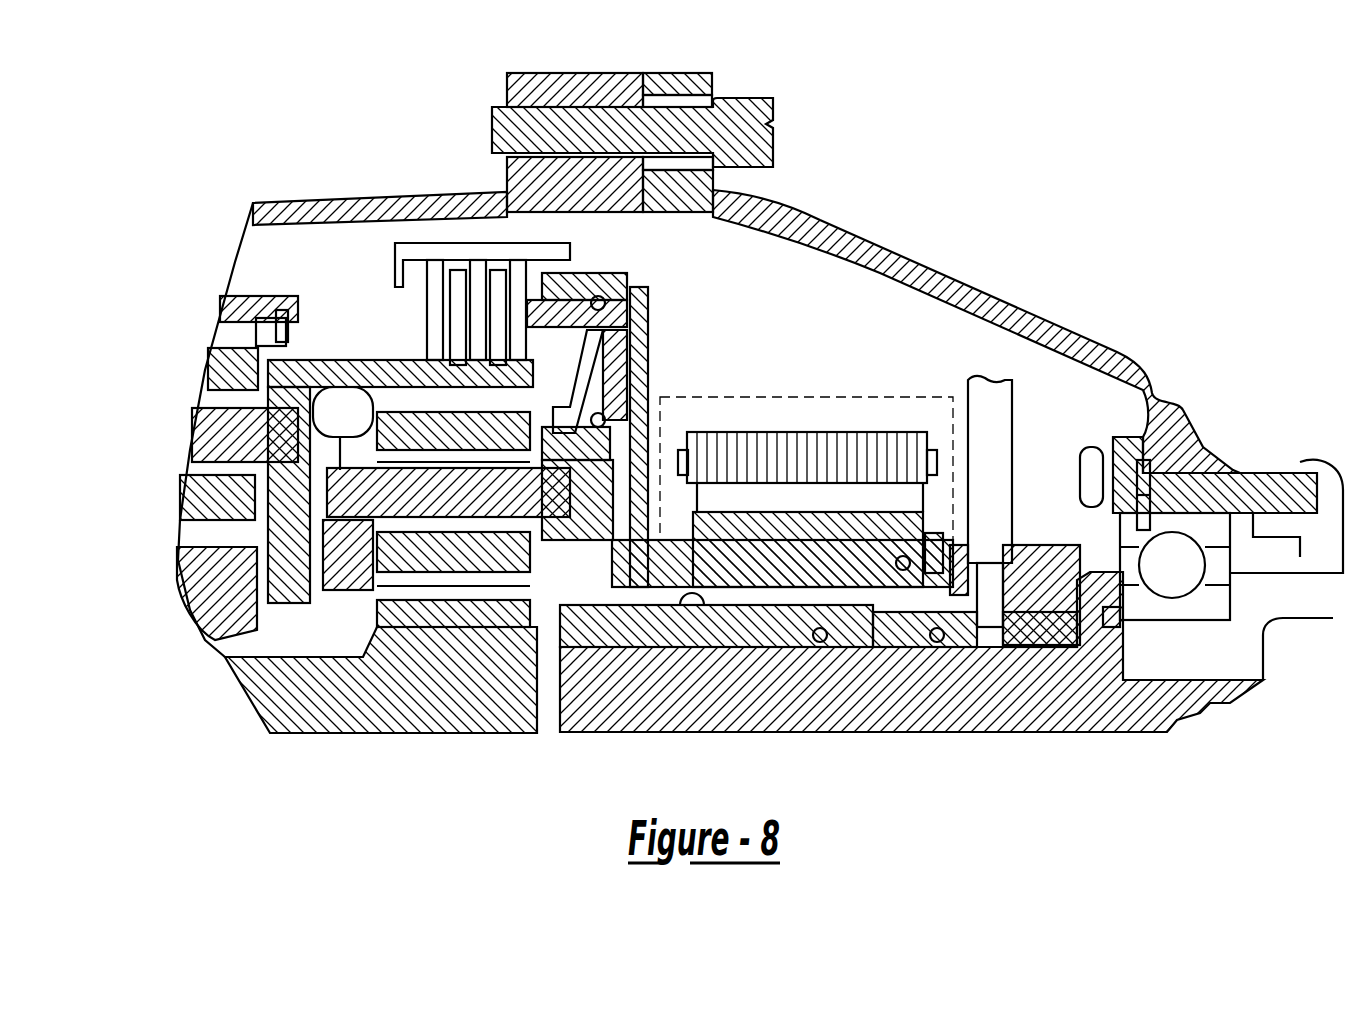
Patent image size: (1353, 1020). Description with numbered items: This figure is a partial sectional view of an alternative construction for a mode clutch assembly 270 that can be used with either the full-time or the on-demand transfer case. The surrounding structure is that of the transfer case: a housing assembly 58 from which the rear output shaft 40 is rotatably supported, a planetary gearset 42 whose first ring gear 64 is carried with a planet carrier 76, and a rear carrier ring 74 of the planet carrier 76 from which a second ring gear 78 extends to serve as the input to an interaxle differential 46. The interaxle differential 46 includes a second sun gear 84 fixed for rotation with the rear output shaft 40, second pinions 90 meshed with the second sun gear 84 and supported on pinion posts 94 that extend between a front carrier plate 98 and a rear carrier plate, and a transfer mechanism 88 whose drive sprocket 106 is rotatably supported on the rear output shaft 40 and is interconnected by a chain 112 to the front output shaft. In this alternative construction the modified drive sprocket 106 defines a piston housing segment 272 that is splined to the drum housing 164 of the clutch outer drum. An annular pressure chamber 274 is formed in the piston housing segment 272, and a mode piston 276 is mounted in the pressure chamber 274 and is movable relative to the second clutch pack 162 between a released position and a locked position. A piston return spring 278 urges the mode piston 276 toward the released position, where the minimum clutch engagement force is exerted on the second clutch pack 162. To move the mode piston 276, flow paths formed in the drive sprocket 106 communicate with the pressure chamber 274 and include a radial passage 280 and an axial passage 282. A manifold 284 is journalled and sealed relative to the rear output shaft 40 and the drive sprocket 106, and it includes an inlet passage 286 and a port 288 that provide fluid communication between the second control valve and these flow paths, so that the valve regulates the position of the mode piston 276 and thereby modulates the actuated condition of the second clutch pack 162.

The rear output shaft 40 is at (1098, 720).
The planetary gearset 42 is at (175, 440).
The interaxle differential 46 is at (328, 635).
The housing assembly 58 is at (1128, 347).
The first ring gear 64 is at (245, 304).
The rear carrier ring 74 is at (275, 515).
The planet carrier 76 is at (300, 358).
The second ring gear 78 is at (406, 362).
The second sun gear 84 is at (502, 678).
The transfer mechanism 88 is at (933, 370).
The second pinions 90 is at (402, 565).
The pinion posts 94 is at (453, 511).
The front carrier plate 98 is at (345, 432).
The drive sprocket 106 is at (768, 560).
The chain 112 is at (850, 405).
The second clutch pack 162 is at (483, 245).
The drum housing 164 is at (435, 245).
The mode clutch assembly 270 is at (674, 275).
The piston housing segment 272 is at (645, 334).
The pressure chamber 274 is at (648, 370).
The mode piston 276 is at (628, 299).
The piston return spring 278 is at (592, 375).
The radial passage 280 is at (628, 545).
The axial passage 282 is at (683, 615).
The manifold 284 is at (1026, 593).
The inlet passage 286 is at (900, 612).
The port 288 is at (1005, 612).